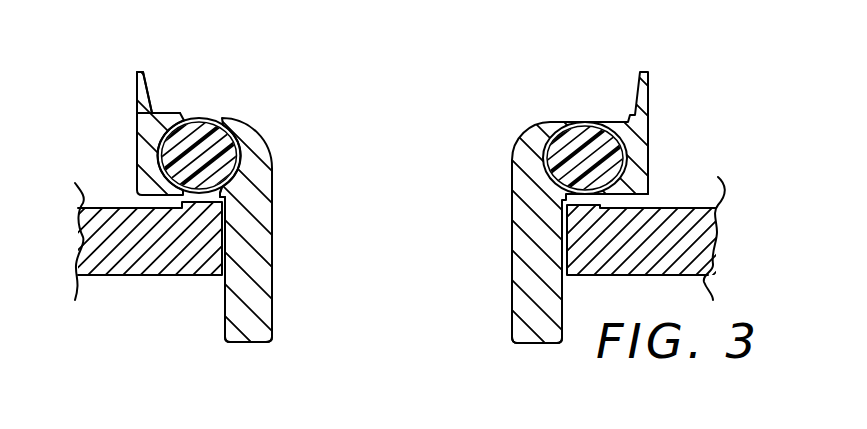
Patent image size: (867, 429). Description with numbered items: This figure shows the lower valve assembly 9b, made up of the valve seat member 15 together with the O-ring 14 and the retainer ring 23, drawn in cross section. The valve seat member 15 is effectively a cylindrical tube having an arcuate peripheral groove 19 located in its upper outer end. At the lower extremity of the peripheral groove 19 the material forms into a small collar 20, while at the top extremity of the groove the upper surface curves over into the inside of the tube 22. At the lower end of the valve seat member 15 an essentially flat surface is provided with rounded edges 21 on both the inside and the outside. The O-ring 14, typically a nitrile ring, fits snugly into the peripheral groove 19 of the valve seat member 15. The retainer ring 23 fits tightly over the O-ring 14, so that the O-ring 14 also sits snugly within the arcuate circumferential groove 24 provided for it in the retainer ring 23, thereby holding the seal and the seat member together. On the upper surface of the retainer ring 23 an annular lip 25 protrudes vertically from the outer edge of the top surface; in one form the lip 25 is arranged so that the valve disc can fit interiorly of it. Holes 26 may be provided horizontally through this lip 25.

The lower valve assembly 9b is at (588, 290).
The O-ring 14 is at (588, 107).
The valve seat member 15 is at (198, 293).
The arcuate peripheral groove 19 is at (228, 147).
The small collar 20 is at (227, 193).
The rounded edges 21 is at (228, 347).
The inside of the tube 22 is at (273, 153).
The retainer ring 23 is at (137, 155).
The arcuate circumferential groove 24 is at (640, 152).
The annular lip 25 is at (142, 71).
The holes 26 is at (137, 110).